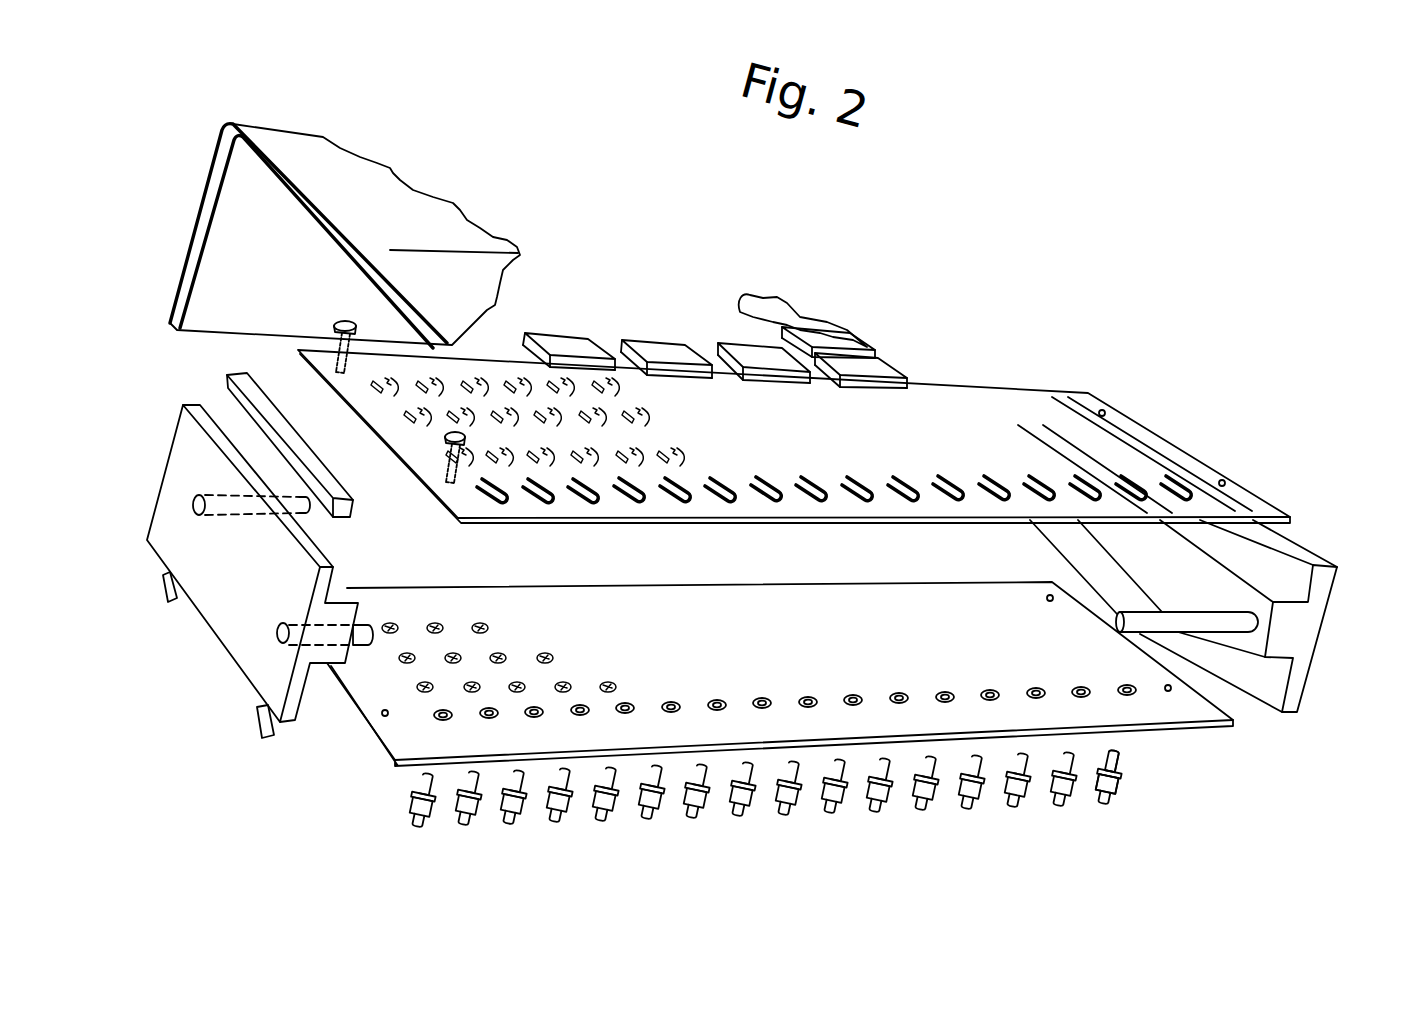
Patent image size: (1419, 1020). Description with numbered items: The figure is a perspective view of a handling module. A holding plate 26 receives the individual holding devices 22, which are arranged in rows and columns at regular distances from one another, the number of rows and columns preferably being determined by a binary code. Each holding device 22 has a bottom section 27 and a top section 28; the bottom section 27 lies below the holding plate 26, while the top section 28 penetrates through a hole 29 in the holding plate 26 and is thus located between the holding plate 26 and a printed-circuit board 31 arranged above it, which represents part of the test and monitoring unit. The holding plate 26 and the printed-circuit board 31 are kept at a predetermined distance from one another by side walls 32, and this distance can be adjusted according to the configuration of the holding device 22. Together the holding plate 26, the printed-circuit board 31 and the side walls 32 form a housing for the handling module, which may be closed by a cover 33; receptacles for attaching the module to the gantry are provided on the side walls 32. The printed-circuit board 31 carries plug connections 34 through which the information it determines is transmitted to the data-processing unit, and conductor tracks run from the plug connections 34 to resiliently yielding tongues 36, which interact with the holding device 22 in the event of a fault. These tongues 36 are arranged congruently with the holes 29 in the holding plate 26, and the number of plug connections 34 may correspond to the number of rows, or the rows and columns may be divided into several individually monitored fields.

The holding device 22 is at (1100, 822).
The holding plate 26 is at (1213, 708).
The bottom section 27 is at (1110, 790).
The top section 28 is at (1117, 767).
The hole 29 is at (1143, 690).
The printed-circuit board 31 is at (1135, 413).
The side wall 32 is at (1300, 627).
The cover 33 is at (377, 182).
The plug connection 34 is at (723, 323).
The tongue 36 is at (1187, 482).